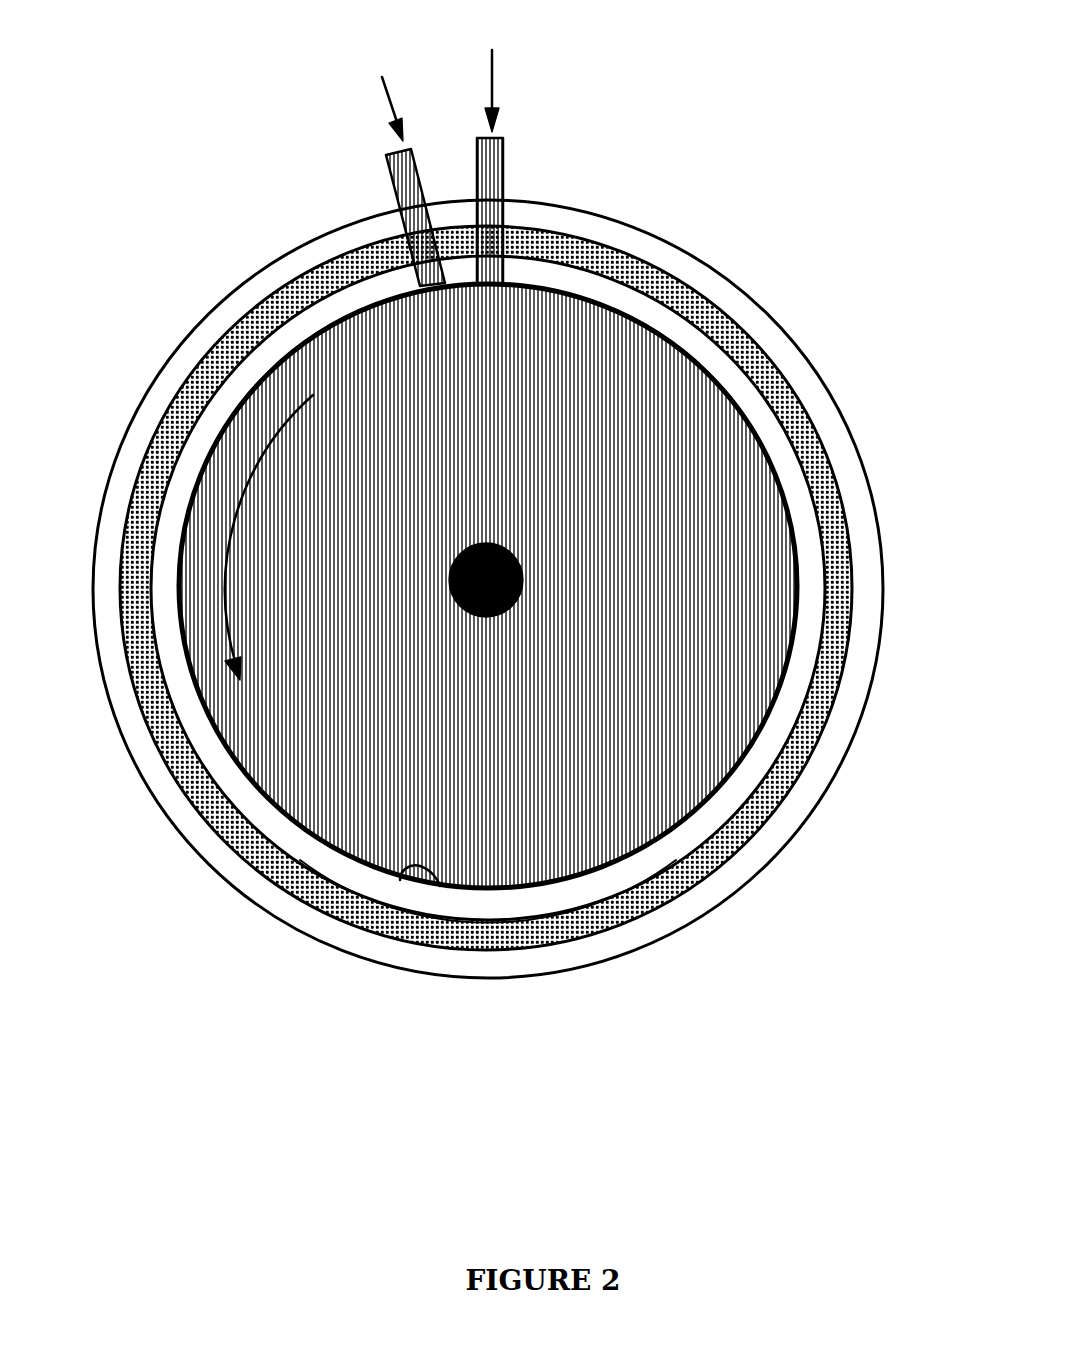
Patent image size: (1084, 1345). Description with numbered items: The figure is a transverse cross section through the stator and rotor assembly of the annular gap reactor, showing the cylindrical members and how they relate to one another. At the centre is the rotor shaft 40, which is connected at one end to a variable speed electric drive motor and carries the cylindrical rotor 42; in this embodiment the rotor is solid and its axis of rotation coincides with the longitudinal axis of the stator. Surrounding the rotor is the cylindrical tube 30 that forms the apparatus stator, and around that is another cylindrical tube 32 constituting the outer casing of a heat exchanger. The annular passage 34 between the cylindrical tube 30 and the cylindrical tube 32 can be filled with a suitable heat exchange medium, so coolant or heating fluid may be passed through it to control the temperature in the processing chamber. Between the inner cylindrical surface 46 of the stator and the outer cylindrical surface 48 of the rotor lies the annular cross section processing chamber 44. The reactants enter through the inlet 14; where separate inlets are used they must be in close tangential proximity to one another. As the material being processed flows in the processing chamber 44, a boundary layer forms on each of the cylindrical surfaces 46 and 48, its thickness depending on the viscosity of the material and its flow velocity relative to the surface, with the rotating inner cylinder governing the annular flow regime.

The inlet 14 is at (392, 180).
The cylindrical tube 30 is at (257, 818).
The cylindrical tube 32 is at (706, 286).
The annular passage 34 is at (825, 683).
The rotor shaft 40 is at (520, 613).
The cylindrical rotor 42 is at (588, 775).
The processing chamber 44 is at (598, 302).
The inner cylindrical surface 46 is at (553, 890).
The outer cylindrical surface 48 is at (440, 886).